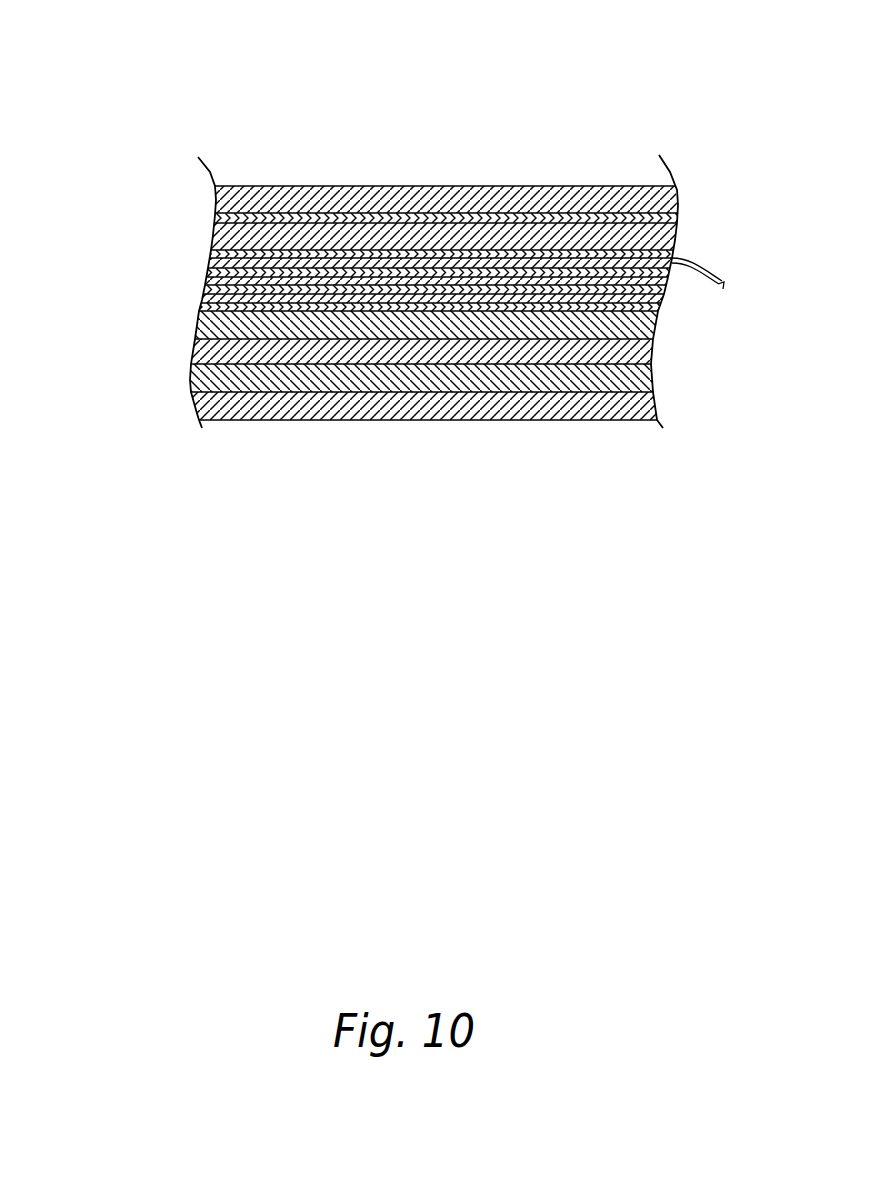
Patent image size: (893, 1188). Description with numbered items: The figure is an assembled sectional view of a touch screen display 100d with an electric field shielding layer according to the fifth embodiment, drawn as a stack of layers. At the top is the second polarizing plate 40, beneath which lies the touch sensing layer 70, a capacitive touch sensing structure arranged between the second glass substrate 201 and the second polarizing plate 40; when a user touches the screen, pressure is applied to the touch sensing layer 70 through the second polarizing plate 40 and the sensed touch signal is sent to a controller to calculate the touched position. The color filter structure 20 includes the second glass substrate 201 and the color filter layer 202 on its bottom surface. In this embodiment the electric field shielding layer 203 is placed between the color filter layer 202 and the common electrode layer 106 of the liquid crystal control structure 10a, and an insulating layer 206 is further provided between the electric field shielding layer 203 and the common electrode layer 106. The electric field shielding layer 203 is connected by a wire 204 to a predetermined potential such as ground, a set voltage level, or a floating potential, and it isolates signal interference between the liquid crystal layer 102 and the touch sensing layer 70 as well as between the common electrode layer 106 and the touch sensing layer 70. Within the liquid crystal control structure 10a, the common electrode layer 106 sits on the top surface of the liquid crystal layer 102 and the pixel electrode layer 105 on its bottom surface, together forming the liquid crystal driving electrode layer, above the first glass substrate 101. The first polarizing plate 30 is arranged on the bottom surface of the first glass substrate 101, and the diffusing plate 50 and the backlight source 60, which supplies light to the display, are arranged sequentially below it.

The touch screen display 100d is at (607, 93).
The second polarizing plate 40 is at (680, 189).
The touch sensing layer 70 is at (684, 212).
The color filter structure 20 is at (92, 178).
The second glass substrate 201 is at (212, 237).
The color filter layer 202 is at (210, 254).
The electric field shielding layer 203 is at (207, 265).
The insulating layer 206 is at (205, 273).
The wire 204 is at (698, 284).
The liquid crystal control structure 10a is at (92, 289).
The common electrode layer 106 is at (203, 292).
The liquid crystal layer 102 is at (200, 302).
The pixel electrode layer 105 is at (193, 320).
The first glass substrate 101 is at (190, 340).
The first polarizing plate 30 is at (187, 367).
The diffusing plate 50 is at (187, 387).
The backlight source 60 is at (187, 403).